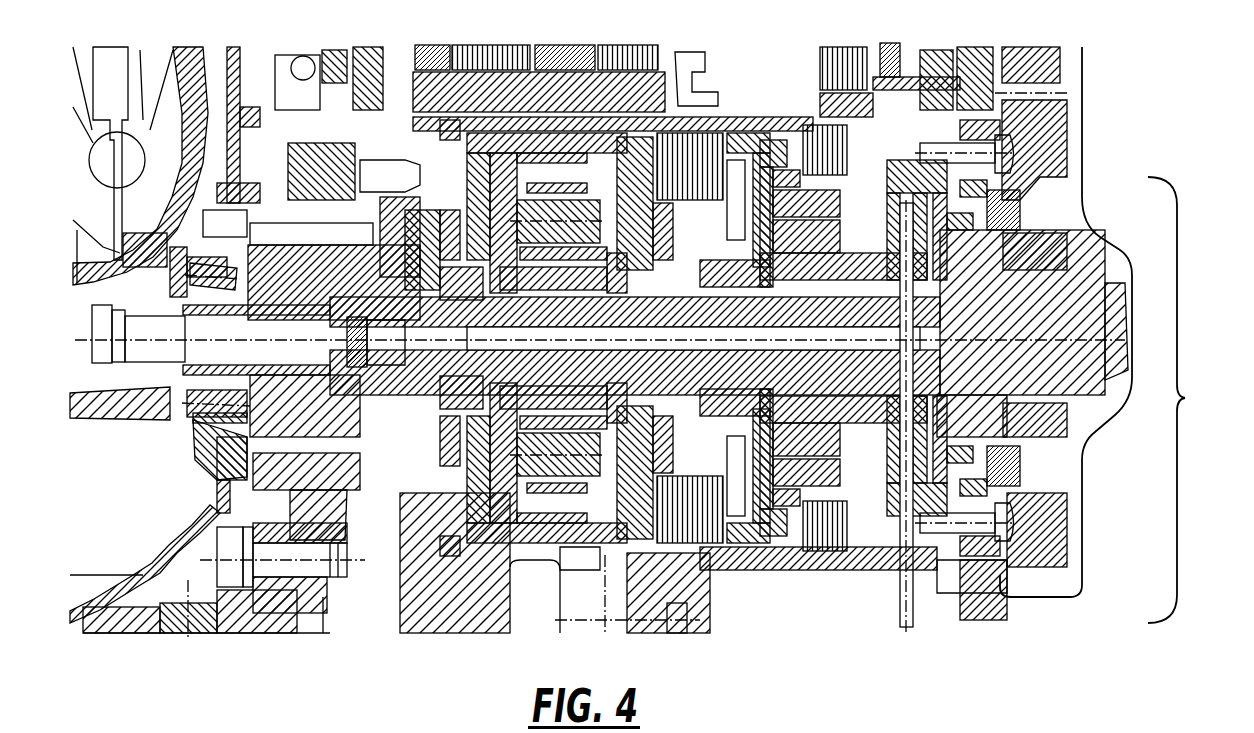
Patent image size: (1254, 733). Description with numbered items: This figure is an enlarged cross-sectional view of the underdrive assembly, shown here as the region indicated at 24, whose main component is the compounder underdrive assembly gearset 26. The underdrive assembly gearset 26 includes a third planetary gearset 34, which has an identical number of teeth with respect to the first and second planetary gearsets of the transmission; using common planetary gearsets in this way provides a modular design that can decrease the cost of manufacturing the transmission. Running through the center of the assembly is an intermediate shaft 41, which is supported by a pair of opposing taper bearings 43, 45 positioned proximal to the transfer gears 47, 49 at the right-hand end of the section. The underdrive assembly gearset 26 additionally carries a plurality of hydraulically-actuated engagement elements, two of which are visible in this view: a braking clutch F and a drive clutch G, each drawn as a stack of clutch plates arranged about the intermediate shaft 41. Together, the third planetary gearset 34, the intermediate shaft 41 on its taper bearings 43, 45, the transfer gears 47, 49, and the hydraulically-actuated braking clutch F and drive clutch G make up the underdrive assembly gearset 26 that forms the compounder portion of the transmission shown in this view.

The transmission housing 24 is at (1078, 620).
The underdrive assembly gearset 26 is at (1189, 400).
The third planetary gearset 34 is at (585, 550).
The intermediate shaft 41 is at (1122, 378).
The taper bearing 43 is at (1040, 240).
The taper bearing 45 is at (1020, 200).
The transfer gear 47 is at (1065, 65).
The transfer gear 49 is at (1068, 120).
The drive clutch G is at (715, 550).
The braking clutch F is at (805, 555).